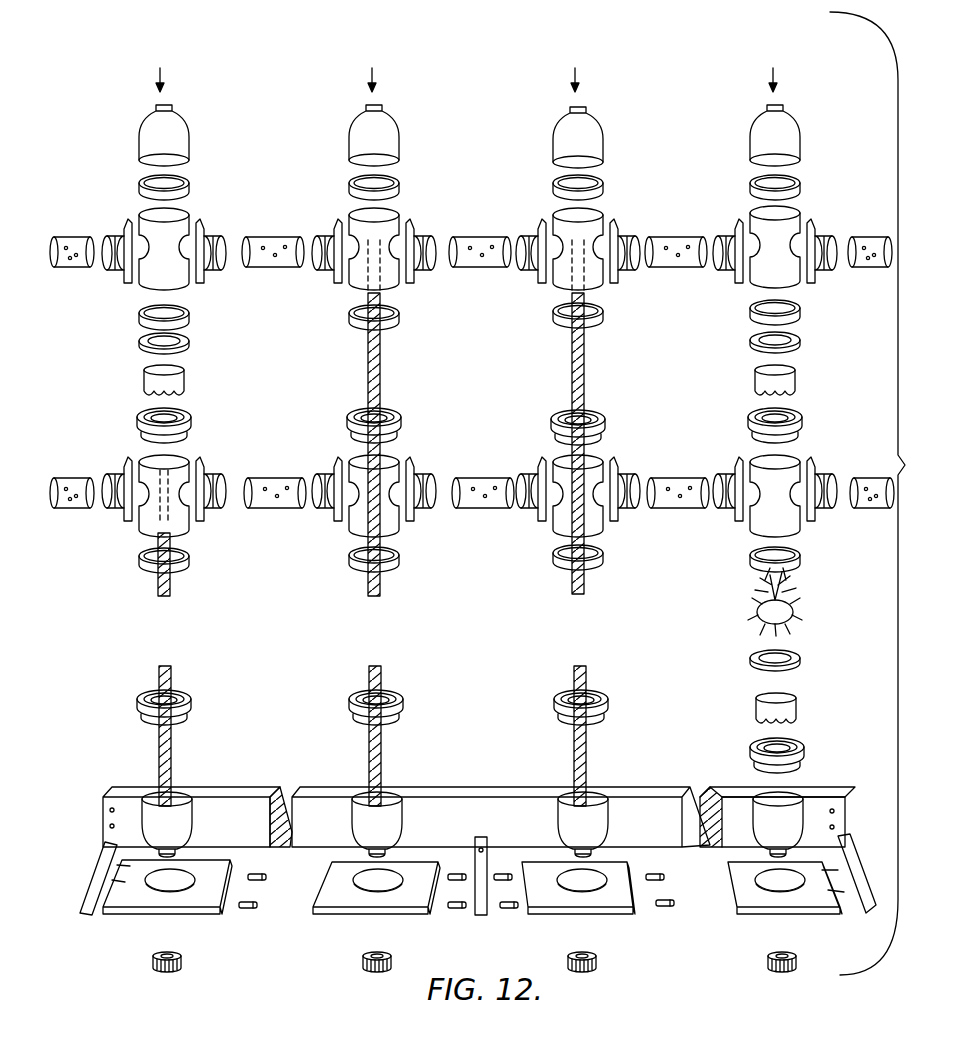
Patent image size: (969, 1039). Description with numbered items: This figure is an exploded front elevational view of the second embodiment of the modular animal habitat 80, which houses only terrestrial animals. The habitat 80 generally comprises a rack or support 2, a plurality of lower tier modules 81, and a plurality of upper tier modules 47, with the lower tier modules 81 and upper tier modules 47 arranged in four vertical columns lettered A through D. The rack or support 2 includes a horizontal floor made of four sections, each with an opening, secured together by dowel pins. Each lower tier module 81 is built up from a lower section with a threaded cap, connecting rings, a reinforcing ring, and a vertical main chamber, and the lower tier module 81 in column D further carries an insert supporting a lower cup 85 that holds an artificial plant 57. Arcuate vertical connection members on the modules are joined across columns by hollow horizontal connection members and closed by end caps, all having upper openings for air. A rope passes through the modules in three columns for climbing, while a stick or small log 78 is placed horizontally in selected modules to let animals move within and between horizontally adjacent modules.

The rack or support 2 is at (118, 931).
The upper tier module 47 is at (60, 294).
The artificial plant 57 is at (796, 616).
The stick or small log 78 is at (196, 462).
The modular animal habitat 80 is at (280, 74).
The lower tier module 81 is at (118, 548).
The lower cup 85 is at (756, 716).